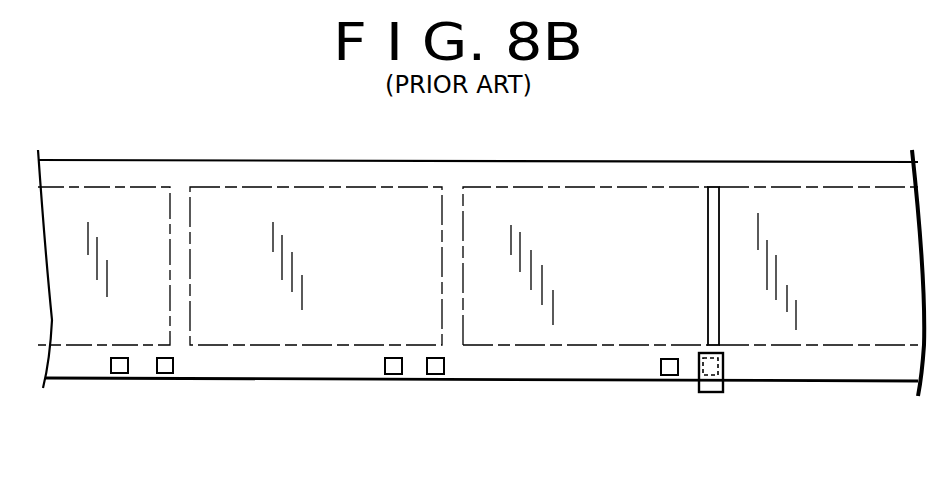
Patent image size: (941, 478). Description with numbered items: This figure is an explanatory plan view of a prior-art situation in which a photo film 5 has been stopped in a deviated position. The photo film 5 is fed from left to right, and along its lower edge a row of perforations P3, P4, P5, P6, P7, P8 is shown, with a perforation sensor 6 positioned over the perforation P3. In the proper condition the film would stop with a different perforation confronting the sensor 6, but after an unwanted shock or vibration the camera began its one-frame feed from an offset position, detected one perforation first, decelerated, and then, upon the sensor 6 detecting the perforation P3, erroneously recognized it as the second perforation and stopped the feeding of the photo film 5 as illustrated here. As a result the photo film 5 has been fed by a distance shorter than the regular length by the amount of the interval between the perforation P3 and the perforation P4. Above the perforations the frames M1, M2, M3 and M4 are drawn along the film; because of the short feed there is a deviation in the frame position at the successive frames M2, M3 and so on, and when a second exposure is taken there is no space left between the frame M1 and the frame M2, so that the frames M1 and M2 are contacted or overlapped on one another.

The photo film 5 is at (683, 162).
The perforation sensor 6 is at (723, 385).
The frame M1 is at (770, 187).
The frame M2 is at (548, 187).
The frame M3 is at (258, 187).
The frame M4 is at (80, 187).
The perforation P3 is at (700, 370).
The perforation P4 is at (669, 377).
The perforation P5 is at (436, 377).
The perforation P6 is at (395, 377).
The perforation P7 is at (164, 376).
The perforation P8 is at (120, 376).